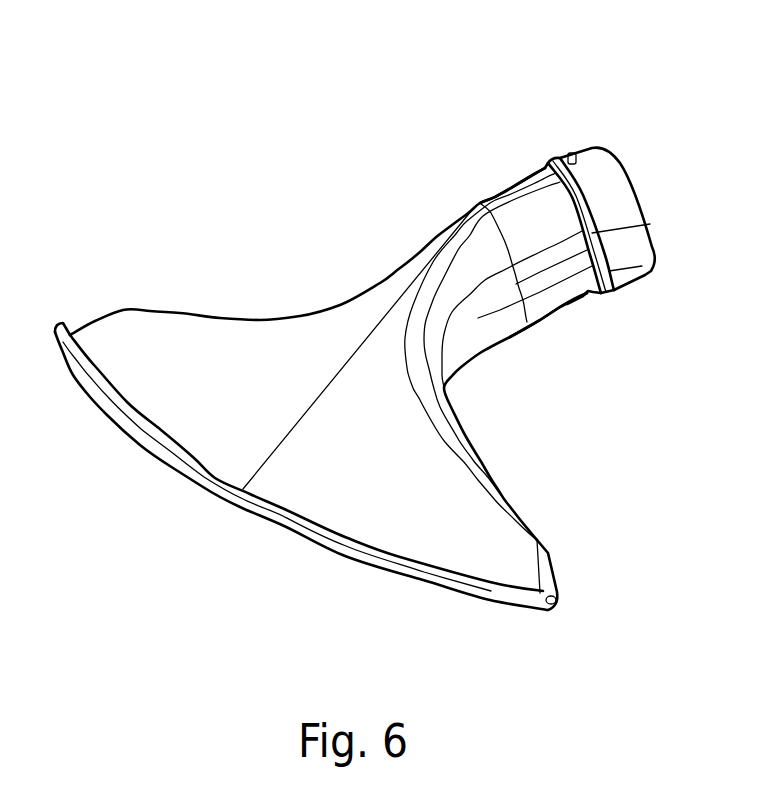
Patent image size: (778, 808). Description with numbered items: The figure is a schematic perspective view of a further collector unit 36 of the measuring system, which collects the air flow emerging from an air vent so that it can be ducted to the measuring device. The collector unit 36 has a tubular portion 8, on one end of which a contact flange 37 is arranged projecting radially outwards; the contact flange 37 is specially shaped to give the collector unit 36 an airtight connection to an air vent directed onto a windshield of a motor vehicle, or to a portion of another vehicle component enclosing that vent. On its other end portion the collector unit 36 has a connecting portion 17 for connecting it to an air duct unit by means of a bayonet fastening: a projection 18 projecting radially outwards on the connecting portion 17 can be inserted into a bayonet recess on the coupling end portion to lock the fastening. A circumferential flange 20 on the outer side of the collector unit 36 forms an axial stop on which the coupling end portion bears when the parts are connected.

The collector unit 36 is at (383, 322).
The tubular portion 8 is at (523, 207).
The connecting portion 17 is at (626, 203).
The projection 18 is at (572, 152).
The circumferential flange 20 is at (652, 276).
The contact flange 37 is at (137, 441).